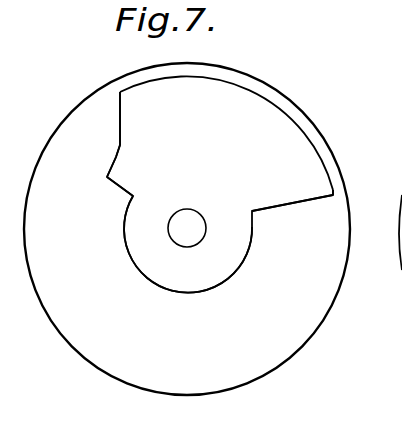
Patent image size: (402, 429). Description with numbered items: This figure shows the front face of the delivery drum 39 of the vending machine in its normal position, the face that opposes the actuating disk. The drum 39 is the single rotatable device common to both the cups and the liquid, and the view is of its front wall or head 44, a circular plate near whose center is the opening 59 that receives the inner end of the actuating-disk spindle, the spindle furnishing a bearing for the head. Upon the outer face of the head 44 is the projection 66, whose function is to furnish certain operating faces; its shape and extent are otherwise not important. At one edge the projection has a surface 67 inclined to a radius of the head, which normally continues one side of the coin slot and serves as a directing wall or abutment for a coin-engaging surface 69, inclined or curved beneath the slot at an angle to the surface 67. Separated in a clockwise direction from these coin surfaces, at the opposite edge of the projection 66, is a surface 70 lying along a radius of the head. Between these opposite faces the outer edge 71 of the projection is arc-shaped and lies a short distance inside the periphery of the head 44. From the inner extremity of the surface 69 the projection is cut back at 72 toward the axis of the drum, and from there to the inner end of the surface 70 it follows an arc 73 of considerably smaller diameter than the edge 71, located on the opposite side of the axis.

The drum 39 is at (233, 133).
The front wall 44 is at (187, 229).
The opening 59 is at (190, 228).
The projection 66 is at (220, 192).
The surface 67 is at (118, 130).
The coin-engaging surface 69 is at (110, 165).
The surface 70 is at (278, 207).
The outer edge 71 is at (308, 143).
The cut-back 72 is at (108, 177).
The arc 73 is at (217, 288).